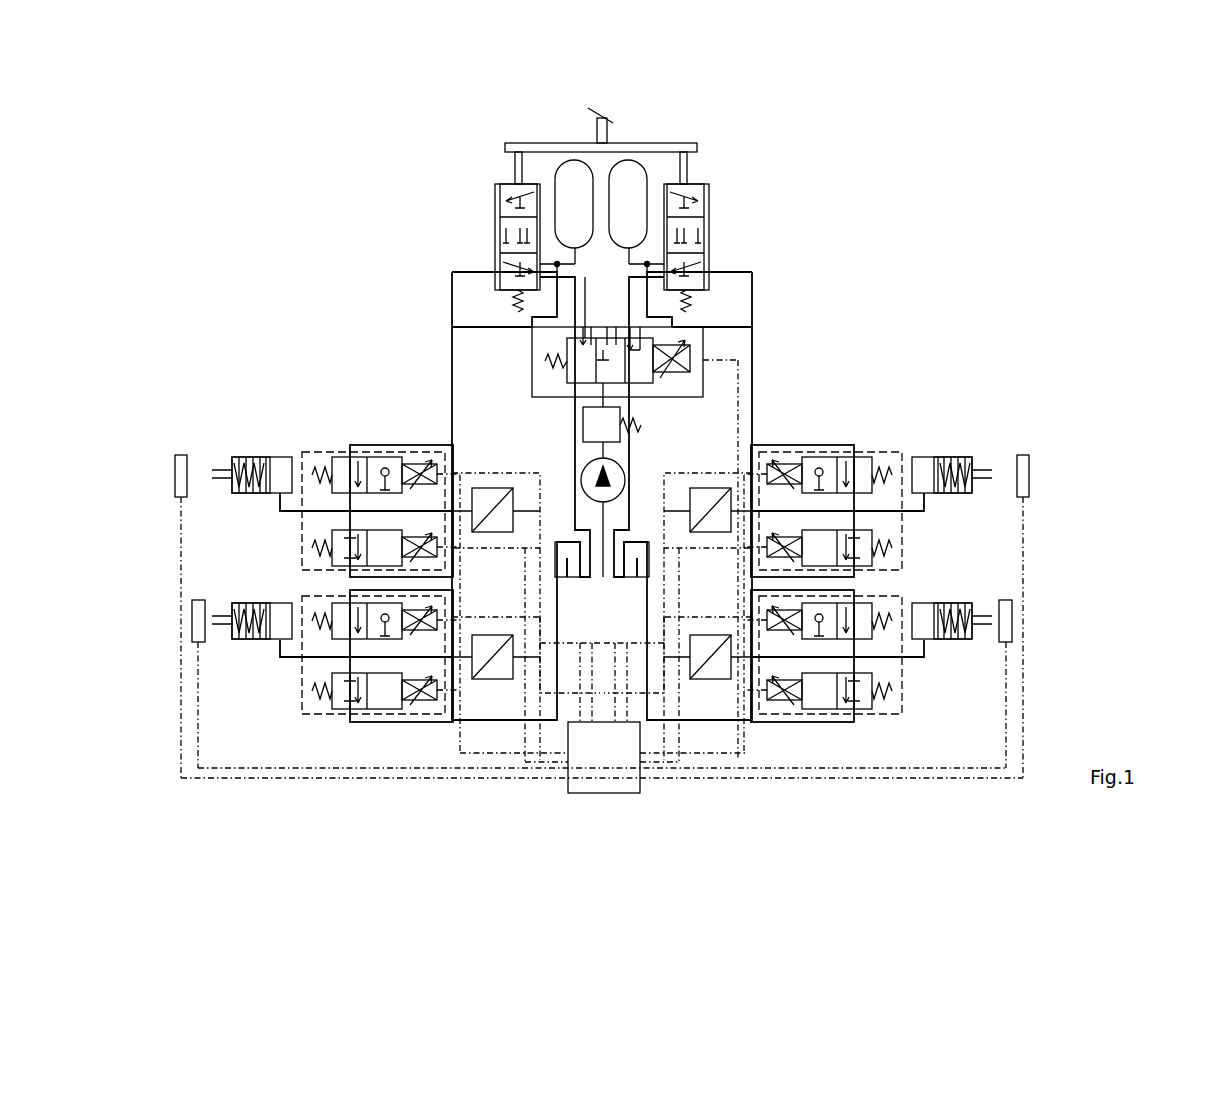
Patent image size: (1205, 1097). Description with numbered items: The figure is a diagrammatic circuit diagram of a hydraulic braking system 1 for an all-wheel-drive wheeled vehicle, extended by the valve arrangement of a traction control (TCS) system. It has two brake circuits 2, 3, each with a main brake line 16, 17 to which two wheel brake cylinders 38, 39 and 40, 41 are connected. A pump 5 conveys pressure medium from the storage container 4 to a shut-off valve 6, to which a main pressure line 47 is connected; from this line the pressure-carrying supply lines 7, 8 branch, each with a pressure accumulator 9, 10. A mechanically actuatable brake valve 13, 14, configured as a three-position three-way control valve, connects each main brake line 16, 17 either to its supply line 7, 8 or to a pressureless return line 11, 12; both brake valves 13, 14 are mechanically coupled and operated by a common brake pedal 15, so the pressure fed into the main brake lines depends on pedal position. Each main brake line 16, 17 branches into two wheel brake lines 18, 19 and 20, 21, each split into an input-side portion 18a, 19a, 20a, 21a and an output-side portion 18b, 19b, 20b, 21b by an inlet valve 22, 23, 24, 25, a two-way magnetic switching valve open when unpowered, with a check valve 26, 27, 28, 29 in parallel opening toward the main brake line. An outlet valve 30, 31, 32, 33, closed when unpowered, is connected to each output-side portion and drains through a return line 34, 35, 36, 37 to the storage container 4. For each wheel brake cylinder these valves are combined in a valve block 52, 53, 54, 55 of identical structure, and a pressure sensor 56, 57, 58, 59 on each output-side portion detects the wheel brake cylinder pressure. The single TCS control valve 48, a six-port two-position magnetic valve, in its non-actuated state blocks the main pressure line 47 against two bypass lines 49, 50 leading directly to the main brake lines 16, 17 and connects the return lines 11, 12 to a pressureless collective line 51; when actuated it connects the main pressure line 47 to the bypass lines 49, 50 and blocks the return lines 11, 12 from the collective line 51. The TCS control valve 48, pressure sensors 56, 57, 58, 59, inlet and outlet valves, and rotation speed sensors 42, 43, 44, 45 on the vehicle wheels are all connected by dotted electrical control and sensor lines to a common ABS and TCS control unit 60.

The hydraulic braking system 1 is at (250, 182).
The brake circuit 2 is at (310, 303).
The brake circuit 3 is at (892, 303).
The storage container 4 is at (610, 562).
The pump 5 is at (626, 481).
The shut-off valve 6 is at (612, 432).
The supply line 7 is at (532, 355).
The supply line 8 is at (703, 370).
The pressure accumulator 9 is at (574, 212).
The pressure accumulator 10 is at (628, 212).
The return line 11 is at (557, 308).
The return line 12 is at (587, 302).
The brake valve 13 is at (465, 226).
The brake valve 14 is at (740, 226).
The brake pedal 15 is at (610, 112).
The main brake line 16 is at (452, 310).
The main brake line 17 is at (752, 310).
The wheel brake line 18 is at (351, 549).
The input-side portion of wheel brake line 18a is at (420, 448).
The output-side portion of wheel brake line 18b is at (305, 452).
The wheel brake line 19 is at (345, 656).
The input-side portion of wheel brake line 19a is at (452, 562).
The output-side portion of wheel brake line 19b is at (302, 660).
The wheel brake line 20 is at (858, 538).
The input-side portion of wheel brake line 20a is at (800, 445).
The output-side portion of wheel brake line 20b is at (900, 452).
The wheel brake line 21 is at (871, 653).
The input-side portion of wheel brake line 21a is at (752, 562).
The output-side portion of wheel brake line 21b is at (905, 660).
The inlet valve 22 is at (352, 430).
The inlet valve 23 is at (312, 592).
The inlet valve 24 is at (852, 432).
The inlet valve 25 is at (895, 592).
The check valve 26 is at (376, 432).
The check valve 27 is at (390, 635).
The check valve 28 is at (828, 432).
The check valve 29 is at (818, 635).
The outlet valve 30 is at (334, 536).
The outlet valve 31 is at (398, 712).
The outlet valve 32 is at (872, 530).
The outlet valve 33 is at (875, 688).
The return line 34 is at (520, 578).
The return line 35 is at (553, 635).
The return line 36 is at (688, 578).
The return line 37 is at (655, 635).
The wheel brake cylinder 38 is at (280, 455).
The wheel brake cylinder 39 is at (278, 600).
The wheel brake cylinder 40 is at (926, 455).
The wheel brake cylinder 41 is at (928, 600).
The rotation speed sensor 42 is at (181, 455).
The rotation speed sensor 43 is at (198, 600).
The rotation speed sensor 44 is at (1023, 455).
The rotation speed sensor 45 is at (1006, 600).
The main pressure line 47 is at (608, 400).
The TCS control valve 48 is at (558, 385).
The bypass line 49 is at (532, 333).
The bypass line 50 is at (703, 333).
The collective line 51 is at (574, 450).
The valve block 52 is at (320, 452).
The valve block 53 is at (322, 715).
The valve block 54 is at (886, 452).
The valve block 55 is at (886, 715).
The pressure sensor 56 is at (495, 488).
The pressure sensor 57 is at (505, 635).
The pressure sensor 58 is at (706, 488).
The pressure sensor 59 is at (718, 635).
The ABS and TCS control unit 60 is at (640, 750).